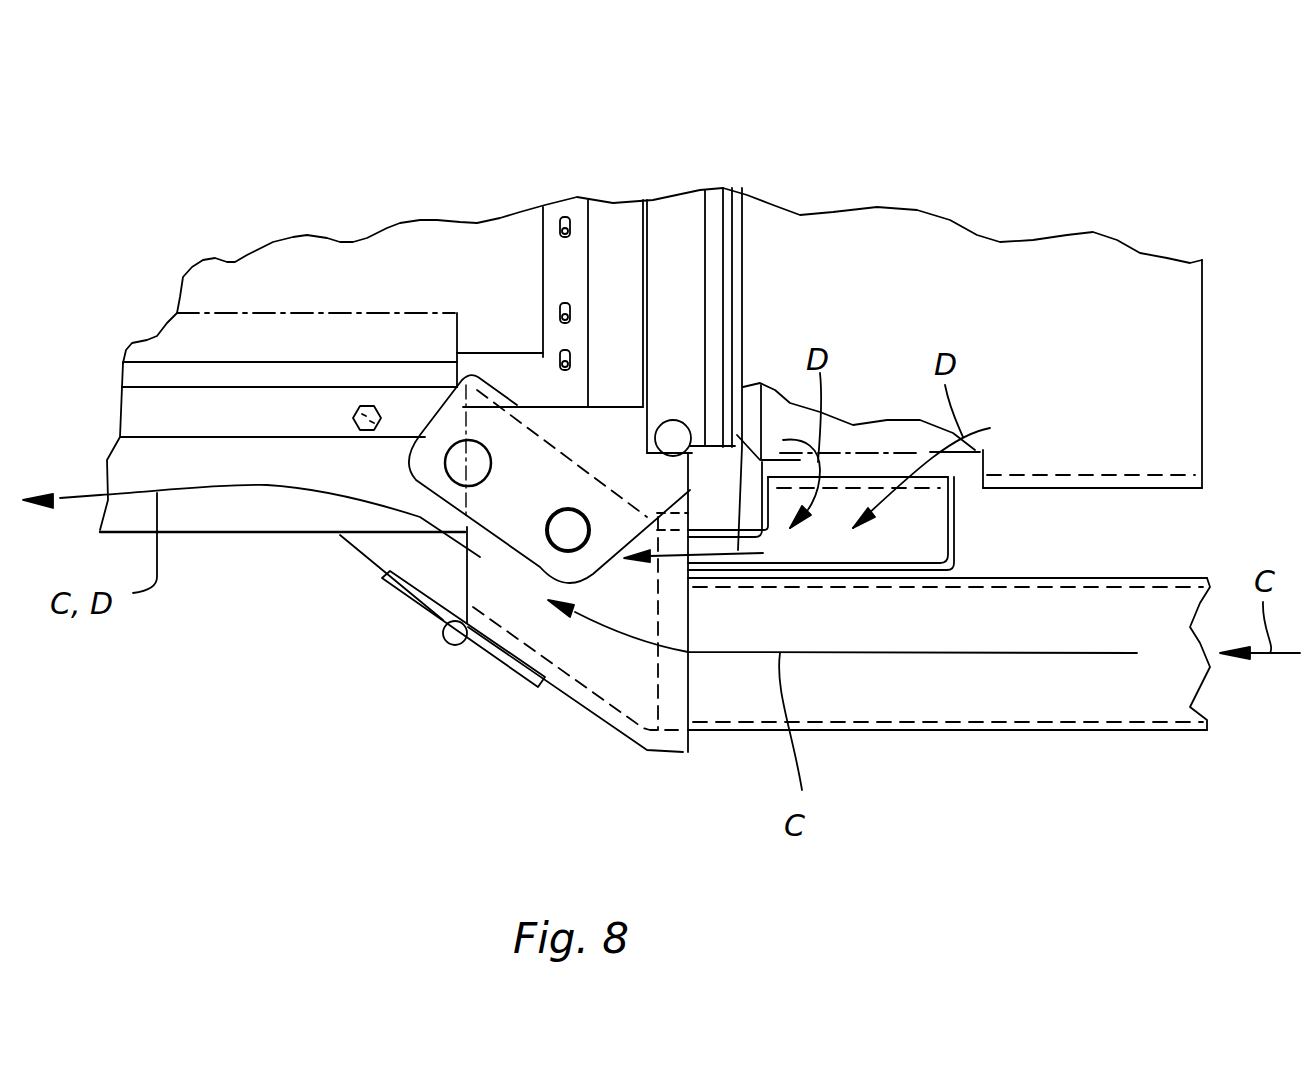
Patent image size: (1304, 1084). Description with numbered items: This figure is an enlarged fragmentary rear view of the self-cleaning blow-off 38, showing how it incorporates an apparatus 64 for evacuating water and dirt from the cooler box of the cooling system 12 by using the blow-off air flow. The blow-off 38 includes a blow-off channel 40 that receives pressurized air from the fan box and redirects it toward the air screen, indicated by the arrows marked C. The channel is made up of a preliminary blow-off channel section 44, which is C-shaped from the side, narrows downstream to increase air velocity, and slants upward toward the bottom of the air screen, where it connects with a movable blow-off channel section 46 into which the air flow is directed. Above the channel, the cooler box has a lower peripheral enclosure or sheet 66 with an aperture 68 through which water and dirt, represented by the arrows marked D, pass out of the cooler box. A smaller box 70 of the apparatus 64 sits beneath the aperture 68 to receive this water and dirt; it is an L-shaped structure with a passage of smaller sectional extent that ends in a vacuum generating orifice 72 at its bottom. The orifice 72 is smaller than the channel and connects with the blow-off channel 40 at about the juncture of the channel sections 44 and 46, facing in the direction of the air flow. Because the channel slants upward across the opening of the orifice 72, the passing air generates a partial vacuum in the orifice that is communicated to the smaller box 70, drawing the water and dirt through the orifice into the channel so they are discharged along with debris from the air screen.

The cooling system 12 is at (1007, 200).
The self-cleaning blow-off 38 is at (555, 714).
The blow-off channel 40 is at (1167, 730).
The preliminary blow-off channel section 44 is at (995, 730).
The movable blow-off channel section 46 is at (243, 533).
The apparatus for evacuating water and dirt 64 is at (955, 548).
The lower peripheral enclosure or sheet 66 is at (1143, 473).
The aperture 68 is at (930, 471).
The smaller box 70 is at (728, 499).
The vacuum generating orifice 72 is at (712, 530).